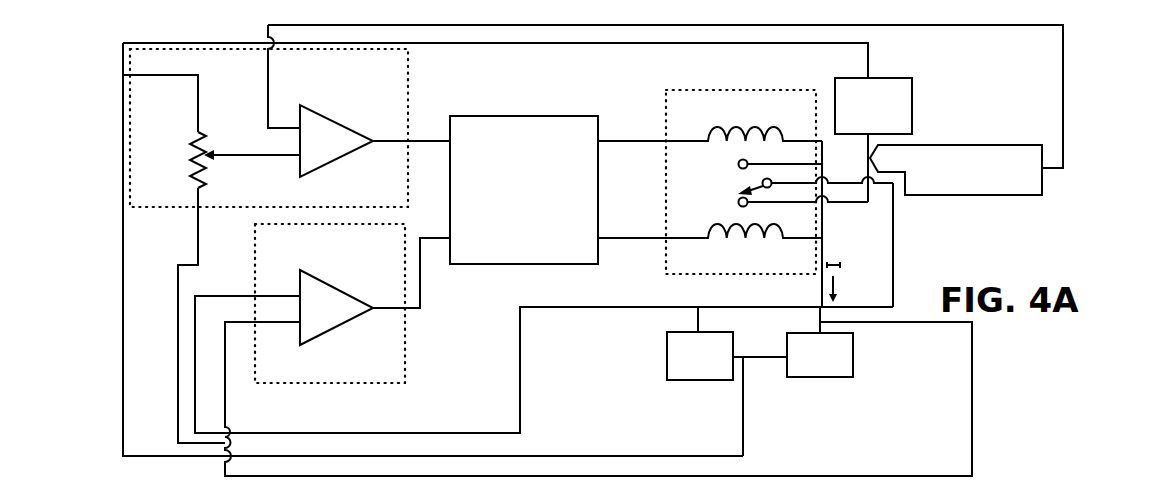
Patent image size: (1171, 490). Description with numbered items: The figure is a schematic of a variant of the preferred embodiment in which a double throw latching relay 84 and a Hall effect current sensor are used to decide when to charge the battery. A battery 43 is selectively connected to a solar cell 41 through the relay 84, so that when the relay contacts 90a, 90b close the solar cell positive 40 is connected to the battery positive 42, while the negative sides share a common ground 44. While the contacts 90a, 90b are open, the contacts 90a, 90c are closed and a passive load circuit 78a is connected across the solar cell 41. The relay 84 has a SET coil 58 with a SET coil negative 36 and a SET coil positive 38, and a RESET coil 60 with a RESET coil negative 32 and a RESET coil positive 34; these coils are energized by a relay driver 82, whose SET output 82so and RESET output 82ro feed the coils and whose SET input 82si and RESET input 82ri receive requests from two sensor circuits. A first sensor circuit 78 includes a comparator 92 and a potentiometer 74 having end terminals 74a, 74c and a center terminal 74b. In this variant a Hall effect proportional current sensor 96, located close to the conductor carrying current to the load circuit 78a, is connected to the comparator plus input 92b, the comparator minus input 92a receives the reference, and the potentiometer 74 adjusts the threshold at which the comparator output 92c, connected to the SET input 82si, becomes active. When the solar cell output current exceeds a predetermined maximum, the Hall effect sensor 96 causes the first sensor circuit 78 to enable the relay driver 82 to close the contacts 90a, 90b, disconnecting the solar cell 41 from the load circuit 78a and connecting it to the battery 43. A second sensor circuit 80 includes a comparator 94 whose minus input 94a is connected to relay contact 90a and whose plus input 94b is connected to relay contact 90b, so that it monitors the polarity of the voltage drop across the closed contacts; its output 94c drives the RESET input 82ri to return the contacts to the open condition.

The potentiometer 74 is at (174, 159).
The potentiometer terminal 74a is at (200, 123).
The potentiometer center terminal 74b is at (215, 158).
The potentiometer terminal 74c is at (196, 206).
The first sensor circuit 78 is at (158, 228).
The second sensor circuit 80 is at (325, 392).
The relay driver 82 is at (525, 110).
The relay driver SET input 82si is at (455, 144).
The relay driver SET output 82so is at (600, 138).
The relay driver RESET input 82ri is at (458, 240).
The relay driver RESET output 82ro is at (602, 236).
The relay 84 is at (660, 116).
The comparator 92 is at (336, 141).
The comparator minus input 92a is at (299, 157).
The comparator plus input 92b is at (296, 128).
The comparator output 92c is at (378, 138).
The comparator 94 is at (336, 307).
The comparator minus input 94a is at (296, 294).
The comparator plus input 94b is at (296, 323).
The comparator output 94c is at (376, 310).
The SET coil negative 36 is at (676, 141).
The SET coil 58 is at (766, 124).
The SET coil positive 38 is at (820, 140).
The RESET coil negative 32 is at (678, 240).
The RESET coil 60 is at (768, 239).
The RESET coil positive 34 is at (820, 240).
The relay contact 90a is at (762, 181).
The relay contact 90b is at (739, 162).
The relay contact 90c is at (739, 204).
The load circuit 78a is at (922, 105).
The Hall effect sensor 96 is at (925, 195).
The solar cell positive 40 is at (692, 312).
The solar cell 41 is at (658, 357).
The battery positive 42 is at (815, 312).
The battery 43 is at (864, 357).
The ground 44 is at (760, 359).